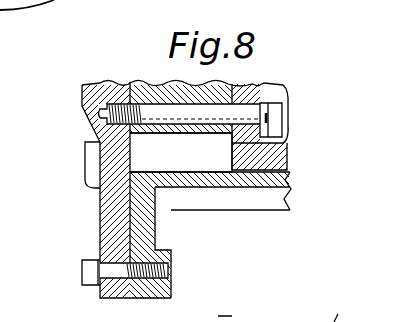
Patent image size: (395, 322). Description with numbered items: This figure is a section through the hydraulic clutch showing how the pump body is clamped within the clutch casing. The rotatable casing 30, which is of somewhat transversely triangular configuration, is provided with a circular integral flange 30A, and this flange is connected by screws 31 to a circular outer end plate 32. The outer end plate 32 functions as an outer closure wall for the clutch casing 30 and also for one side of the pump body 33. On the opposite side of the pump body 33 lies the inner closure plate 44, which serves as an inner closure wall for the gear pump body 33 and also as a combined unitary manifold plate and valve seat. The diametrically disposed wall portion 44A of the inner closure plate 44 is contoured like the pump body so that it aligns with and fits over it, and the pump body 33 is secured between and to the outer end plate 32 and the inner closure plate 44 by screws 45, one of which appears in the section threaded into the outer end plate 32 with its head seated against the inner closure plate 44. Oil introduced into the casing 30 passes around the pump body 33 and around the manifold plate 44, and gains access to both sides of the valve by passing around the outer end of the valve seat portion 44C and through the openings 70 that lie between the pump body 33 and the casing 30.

The rotatable casing 30 is at (292, 192).
The circular integral flange 30A is at (146, 288).
The screws 31 is at (90, 267).
The circular outer end plate 32 is at (88, 85).
The pump body 33 is at (152, 90).
The inner closure plate 44 is at (236, 80).
The diametrically disposed wall portion 44A is at (258, 90).
The valve seat portion 44C is at (284, 158).
The screws 45 is at (272, 118).
The openings 70 is at (242, 138).